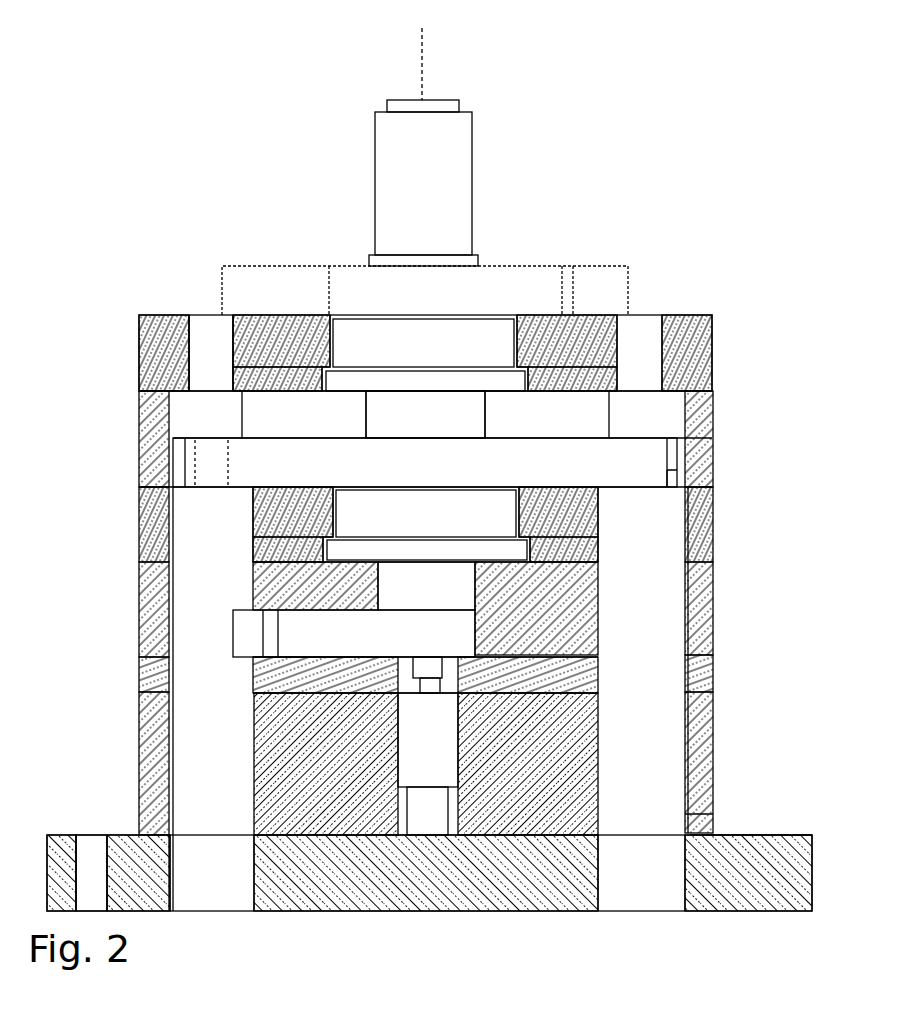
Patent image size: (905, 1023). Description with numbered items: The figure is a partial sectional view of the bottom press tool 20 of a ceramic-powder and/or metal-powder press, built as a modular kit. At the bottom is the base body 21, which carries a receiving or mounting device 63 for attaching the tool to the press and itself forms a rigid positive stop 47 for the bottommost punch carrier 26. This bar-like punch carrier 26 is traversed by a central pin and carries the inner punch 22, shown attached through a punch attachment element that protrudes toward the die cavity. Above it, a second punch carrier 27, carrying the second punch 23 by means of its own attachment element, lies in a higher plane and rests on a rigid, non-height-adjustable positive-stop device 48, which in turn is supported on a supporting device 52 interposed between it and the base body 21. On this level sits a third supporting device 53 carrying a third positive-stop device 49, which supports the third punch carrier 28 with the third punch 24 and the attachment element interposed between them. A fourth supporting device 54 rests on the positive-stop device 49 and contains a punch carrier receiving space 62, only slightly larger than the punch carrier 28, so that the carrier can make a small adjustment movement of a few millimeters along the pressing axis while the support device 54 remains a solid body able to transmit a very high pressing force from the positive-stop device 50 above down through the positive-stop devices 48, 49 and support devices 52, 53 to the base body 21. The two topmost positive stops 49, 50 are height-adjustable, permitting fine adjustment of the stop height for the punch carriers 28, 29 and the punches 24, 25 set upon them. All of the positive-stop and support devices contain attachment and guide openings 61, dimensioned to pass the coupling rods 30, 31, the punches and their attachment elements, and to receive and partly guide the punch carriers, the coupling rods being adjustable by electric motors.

The ceramic-powder and/or metal-powder press tool 20 is at (345, 20).
The base body 21 is at (810, 827).
The punch 22 is at (432, 751).
The punch 23 is at (434, 601).
The punch 24 is at (460, 100).
The punch 25 is at (466, 133).
The punch carrier 26 is at (440, 835).
The punch carrier 27 is at (233, 655).
The punch carrier 28 is at (713, 438).
The punch carrier 29 is at (628, 266).
The coupling rod 30 is at (713, 815).
The coupling rod 31 is at (163, 760).
The positive-stop device 47 is at (770, 827).
The positive-stop device 48 is at (713, 670).
The positive-stop device 49 is at (713, 507).
The positive-stop device 50 is at (713, 335).
The support device 52 is at (713, 768).
The support device 53 is at (713, 613).
The support device 54 is at (713, 400).
The attachment and guide openings 61 is at (199, 301).
The punch carrier receiving space 62 is at (713, 475).
The receiving or mounting device 63 is at (80, 835).